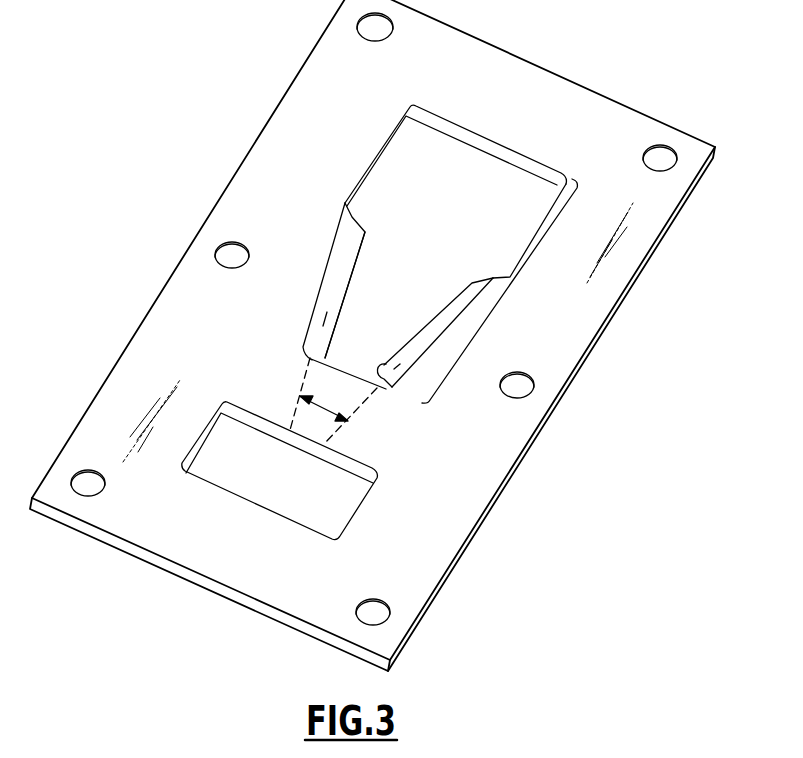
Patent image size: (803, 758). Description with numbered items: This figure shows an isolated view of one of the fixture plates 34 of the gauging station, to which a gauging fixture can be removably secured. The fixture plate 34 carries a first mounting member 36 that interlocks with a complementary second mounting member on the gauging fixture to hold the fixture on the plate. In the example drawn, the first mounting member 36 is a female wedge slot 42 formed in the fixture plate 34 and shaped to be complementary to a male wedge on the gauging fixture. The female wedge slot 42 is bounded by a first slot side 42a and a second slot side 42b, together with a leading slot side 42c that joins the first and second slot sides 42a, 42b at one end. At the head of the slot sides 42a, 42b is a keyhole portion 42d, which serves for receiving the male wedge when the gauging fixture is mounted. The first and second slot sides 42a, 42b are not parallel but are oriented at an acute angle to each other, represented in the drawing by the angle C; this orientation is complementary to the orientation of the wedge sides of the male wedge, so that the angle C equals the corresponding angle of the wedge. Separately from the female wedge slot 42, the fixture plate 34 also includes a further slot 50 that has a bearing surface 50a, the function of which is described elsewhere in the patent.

The fixture plate 34 is at (203, 578).
The first mounting member 36 is at (328, 277).
The female wedge slot 42 is at (510, 278).
The first slot side 42a is at (380, 384).
The second slot side 42b is at (330, 322).
The leading slot side 42c is at (348, 372).
The keyhole portion 42d is at (461, 136).
The slot 50 is at (289, 519).
The bearing surface 50a is at (349, 471).
The angle C is at (348, 416).